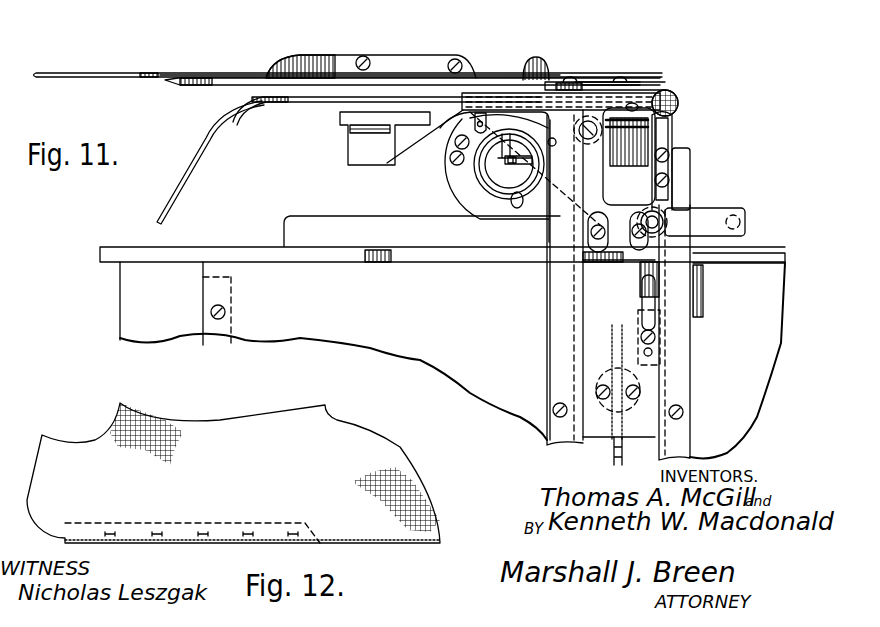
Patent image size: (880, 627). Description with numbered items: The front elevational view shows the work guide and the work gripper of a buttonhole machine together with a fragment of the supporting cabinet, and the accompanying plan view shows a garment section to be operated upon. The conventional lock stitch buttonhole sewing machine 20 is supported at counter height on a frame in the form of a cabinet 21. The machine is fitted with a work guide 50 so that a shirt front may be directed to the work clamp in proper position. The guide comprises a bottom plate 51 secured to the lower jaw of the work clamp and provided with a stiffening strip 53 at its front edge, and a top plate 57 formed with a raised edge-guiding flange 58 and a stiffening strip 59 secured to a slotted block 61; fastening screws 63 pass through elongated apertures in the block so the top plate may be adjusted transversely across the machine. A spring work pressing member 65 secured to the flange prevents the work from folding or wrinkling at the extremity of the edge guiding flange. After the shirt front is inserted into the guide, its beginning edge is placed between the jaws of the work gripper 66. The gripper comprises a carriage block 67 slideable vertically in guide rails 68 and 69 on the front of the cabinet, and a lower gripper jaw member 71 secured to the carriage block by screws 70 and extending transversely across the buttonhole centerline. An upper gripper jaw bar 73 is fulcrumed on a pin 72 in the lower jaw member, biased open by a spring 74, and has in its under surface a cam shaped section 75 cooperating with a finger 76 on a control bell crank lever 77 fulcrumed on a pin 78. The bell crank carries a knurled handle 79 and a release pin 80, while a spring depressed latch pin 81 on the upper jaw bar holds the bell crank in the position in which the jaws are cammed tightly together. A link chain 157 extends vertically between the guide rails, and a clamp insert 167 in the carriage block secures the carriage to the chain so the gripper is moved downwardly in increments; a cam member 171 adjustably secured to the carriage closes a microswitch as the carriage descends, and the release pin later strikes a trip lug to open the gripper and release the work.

The lock stitch buttonhole sewing machine 20 is at (342, 144).
The cabinet 21 is at (118, 302).
The work guide 50 is at (206, 70).
The bottom plate 51 is at (196, 154).
The stiffening strip 53 is at (297, 104).
The top plate 57 is at (121, 74).
The edge-guiding flange 58 is at (302, 63).
The stiffening strip 59 is at (207, 86).
The block 61 is at (555, 85).
The fastening screws 63 is at (618, 78).
The spring work pressing member 65 is at (469, 57).
The work gripper 66 is at (557, 82).
The carriage block 67 is at (588, 297).
The guide rail 68 is at (680, 352).
The guide rail 69 is at (556, 345).
The screws 70 is at (640, 240).
The lower gripper jaw member 71 is at (497, 122).
The pin 72 is at (580, 143).
The upper gripper jaw bar 73 is at (512, 94).
The spring 74 is at (624, 140).
The cam shaped section 75 is at (634, 104).
The finger 76 is at (665, 119).
The control bell crank lever 77 is at (718, 202).
The pin 78 is at (662, 220).
The knurled handle 79 is at (680, 103).
The release pin 80 is at (738, 217).
The latch pin 81 is at (676, 92).
The link chain 157 is at (612, 455).
The clamp insert 167 is at (640, 392).
The cam member 171 is at (656, 348).